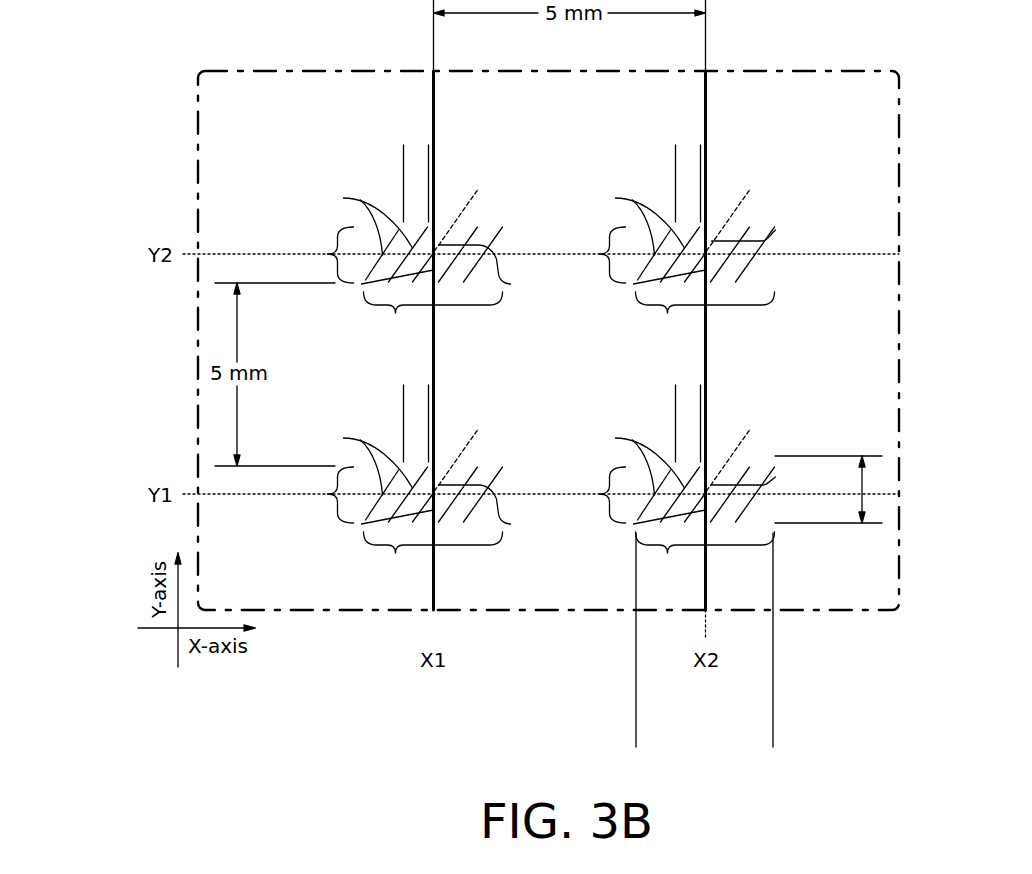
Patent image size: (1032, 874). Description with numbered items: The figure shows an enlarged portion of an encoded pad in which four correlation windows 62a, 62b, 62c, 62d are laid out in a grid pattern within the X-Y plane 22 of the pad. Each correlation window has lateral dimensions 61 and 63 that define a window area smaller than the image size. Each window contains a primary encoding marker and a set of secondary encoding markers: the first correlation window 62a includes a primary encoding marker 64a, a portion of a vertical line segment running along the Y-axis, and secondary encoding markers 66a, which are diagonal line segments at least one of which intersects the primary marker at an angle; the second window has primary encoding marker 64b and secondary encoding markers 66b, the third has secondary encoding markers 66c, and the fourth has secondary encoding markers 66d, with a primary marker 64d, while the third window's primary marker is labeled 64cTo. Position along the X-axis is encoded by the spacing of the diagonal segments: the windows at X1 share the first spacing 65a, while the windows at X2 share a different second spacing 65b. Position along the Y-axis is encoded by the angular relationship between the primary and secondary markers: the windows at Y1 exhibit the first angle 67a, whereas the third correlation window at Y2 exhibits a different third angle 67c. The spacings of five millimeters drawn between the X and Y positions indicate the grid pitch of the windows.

The X-Y plane 22 is at (145, 600).
The lateral dimension 61 is at (773, 725).
The first correlation window 62a is at (393, 527).
The second correlation window 62b is at (665, 527).
The third correlation window 62c is at (393, 287).
The fourth correlation window 62d is at (665, 287).
The lateral dimension 63 is at (862, 523).
The primary encoding marker 64a is at (362, 546).
The primary encoding marker 64b is at (634, 546).
The groove bottom surface 64cTo is at (350, 304).
The groove bottom surface 64d is at (634, 306).
The first spacing 65a is at (396, 423).
The second spacing 65b is at (668, 423).
The secondary encoding markers 66a is at (419, 484).
The secondary encoding markers 66b is at (691, 462).
The secondary encoding markers 66c is at (418, 244).
The groove side wall curve 66d is at (691, 222).
The first angle 67a is at (495, 432).
The third angle 67c is at (494, 192).